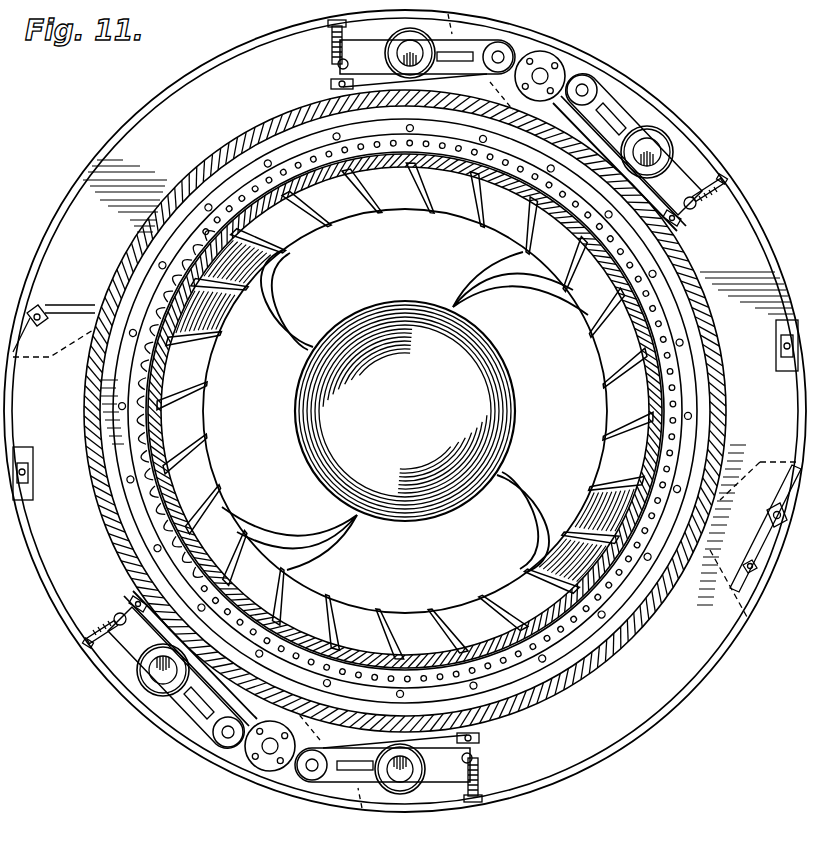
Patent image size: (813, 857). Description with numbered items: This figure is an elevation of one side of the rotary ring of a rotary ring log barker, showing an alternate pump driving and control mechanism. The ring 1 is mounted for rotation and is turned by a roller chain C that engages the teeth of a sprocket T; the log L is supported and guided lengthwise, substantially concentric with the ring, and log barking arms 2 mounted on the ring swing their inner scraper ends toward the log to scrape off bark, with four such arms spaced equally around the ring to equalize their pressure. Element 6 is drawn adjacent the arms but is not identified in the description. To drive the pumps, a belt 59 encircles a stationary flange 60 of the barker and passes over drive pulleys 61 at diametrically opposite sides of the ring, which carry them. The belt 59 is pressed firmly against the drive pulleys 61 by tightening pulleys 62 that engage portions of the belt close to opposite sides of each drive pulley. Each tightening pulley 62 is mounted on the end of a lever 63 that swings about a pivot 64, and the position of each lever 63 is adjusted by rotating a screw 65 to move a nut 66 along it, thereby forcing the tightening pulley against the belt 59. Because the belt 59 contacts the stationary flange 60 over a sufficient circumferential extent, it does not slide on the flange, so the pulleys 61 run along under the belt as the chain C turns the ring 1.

The ring 1 is at (605, 740).
The log barking arm 2 is at (540, 287).
The spoke 6 is at (488, 278).
The belt 59 is at (568, 690).
The stationary flange 60 is at (592, 672).
The drive pulley 61 is at (550, 72).
The tightening pulley 62 is at (505, 50).
The lever 63 is at (470, 43).
The pivot 64 is at (408, 50).
The screw 65 is at (332, 50).
The nut 66 is at (333, 82).
The roller chain C is at (225, 185).
The sprocket T is at (290, 172).
The log L is at (406, 322).